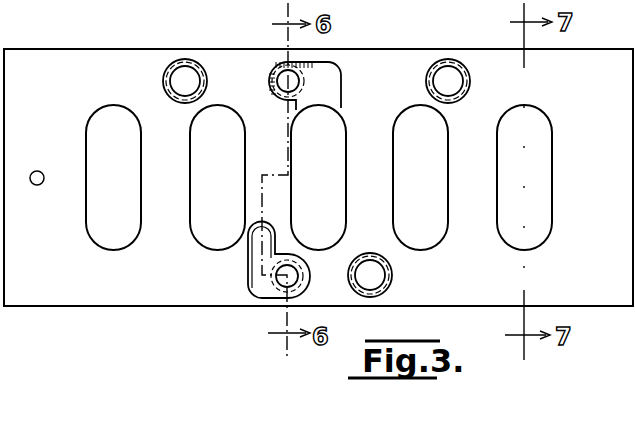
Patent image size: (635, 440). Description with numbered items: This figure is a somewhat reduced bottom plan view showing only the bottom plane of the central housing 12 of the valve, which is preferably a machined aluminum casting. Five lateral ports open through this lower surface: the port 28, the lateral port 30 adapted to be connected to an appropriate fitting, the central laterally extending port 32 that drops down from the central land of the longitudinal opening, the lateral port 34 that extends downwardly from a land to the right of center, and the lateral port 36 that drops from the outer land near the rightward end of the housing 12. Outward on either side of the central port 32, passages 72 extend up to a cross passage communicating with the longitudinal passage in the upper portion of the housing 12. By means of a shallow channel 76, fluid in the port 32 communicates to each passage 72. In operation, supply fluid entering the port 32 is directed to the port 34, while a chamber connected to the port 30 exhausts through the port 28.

The housing 12 is at (587, 49).
The port 28 is at (116, 226).
The lateral port 30 is at (207, 230).
The laterally extending port 32 is at (323, 213).
The lateral port 34 is at (423, 223).
The lateral port 36 is at (525, 222).
The passages 72 is at (284, 84).
The shallow channel 76 is at (325, 86).